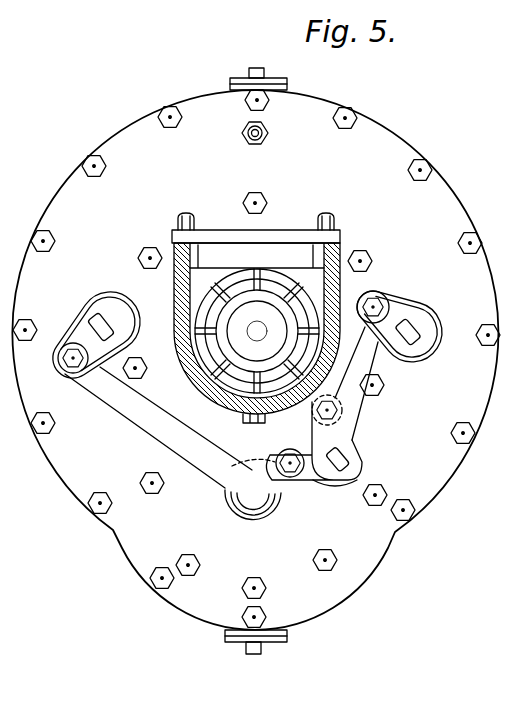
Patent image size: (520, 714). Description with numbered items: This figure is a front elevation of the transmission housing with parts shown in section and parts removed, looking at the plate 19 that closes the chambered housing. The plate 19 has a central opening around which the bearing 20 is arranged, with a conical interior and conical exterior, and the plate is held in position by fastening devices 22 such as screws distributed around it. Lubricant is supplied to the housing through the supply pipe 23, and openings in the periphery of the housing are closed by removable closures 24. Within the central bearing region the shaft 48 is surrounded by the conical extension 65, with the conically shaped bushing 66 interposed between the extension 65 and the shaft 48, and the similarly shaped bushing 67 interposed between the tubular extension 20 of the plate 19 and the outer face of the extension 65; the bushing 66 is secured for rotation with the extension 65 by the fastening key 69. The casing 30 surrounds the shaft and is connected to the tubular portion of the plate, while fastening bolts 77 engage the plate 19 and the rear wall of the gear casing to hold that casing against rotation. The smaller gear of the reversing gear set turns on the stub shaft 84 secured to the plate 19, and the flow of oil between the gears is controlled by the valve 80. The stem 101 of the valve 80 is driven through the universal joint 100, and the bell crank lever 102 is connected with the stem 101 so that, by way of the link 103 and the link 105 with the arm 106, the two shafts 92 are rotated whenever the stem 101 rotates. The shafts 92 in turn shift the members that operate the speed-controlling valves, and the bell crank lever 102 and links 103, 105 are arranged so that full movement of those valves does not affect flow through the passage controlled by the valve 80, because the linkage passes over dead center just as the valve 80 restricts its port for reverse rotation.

The plate 19 is at (438, 222).
The bearing 20 is at (258, 68).
The fastening devices 22 is at (410, 165).
The supply pipe 23 is at (268, 130).
The closures 24 is at (255, 654).
The casing 30 is at (207, 378).
The shaft 48 is at (247, 336).
The extension 65 is at (235, 292).
The bushing 66 is at (292, 333).
The bushing 67 is at (279, 287).
The fastening key 69 is at (262, 296).
The fastening bolts 77 is at (243, 203).
The valve 80 is at (360, 472).
The stub shaft 84 is at (247, 493).
The shafts 92 is at (103, 314).
The universal joint 100 is at (386, 304).
The stem 101 is at (345, 460).
The bell crank lever 102 is at (320, 436).
The link 103 is at (362, 362).
The link 105 is at (155, 431).
The arm 106 is at (80, 337).